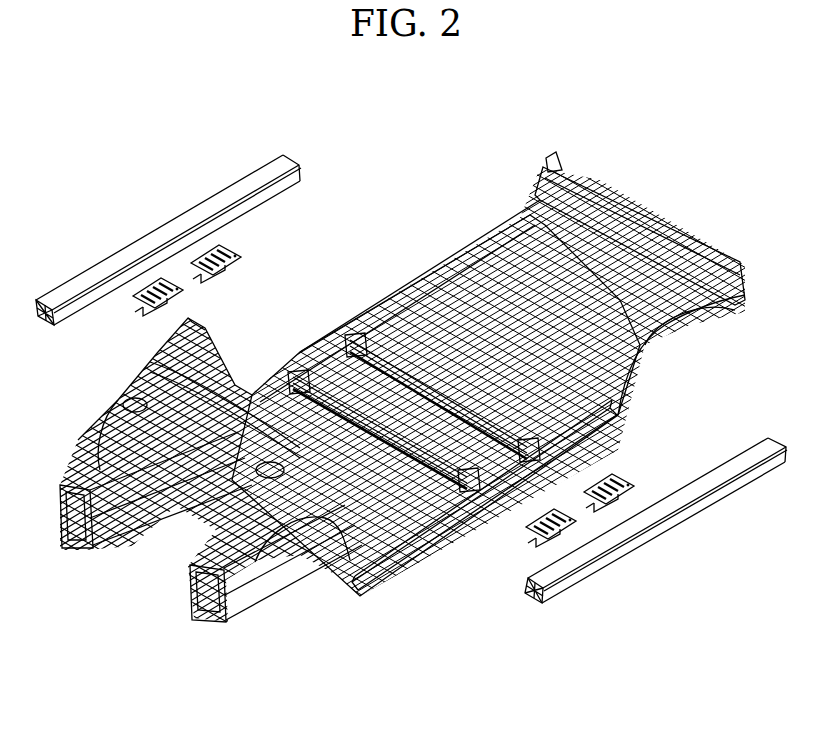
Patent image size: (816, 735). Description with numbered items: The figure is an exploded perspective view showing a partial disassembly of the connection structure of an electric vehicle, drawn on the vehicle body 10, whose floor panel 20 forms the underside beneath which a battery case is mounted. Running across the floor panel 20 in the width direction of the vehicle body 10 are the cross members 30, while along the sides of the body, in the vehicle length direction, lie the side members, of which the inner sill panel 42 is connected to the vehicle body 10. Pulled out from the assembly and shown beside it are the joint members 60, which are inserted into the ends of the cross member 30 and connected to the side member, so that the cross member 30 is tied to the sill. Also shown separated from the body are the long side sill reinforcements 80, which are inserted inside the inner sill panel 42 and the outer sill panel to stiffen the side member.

The vehicle body 10 is at (672, 203).
The floor panel 20 is at (420, 340).
The cross member 30 is at (347, 333).
The inner sill panel 42 is at (433, 527).
The joint member 60 is at (200, 253).
The side sill reinforcement 80 is at (247, 184).